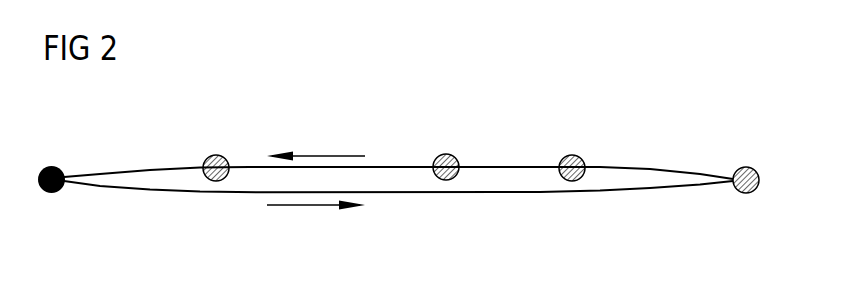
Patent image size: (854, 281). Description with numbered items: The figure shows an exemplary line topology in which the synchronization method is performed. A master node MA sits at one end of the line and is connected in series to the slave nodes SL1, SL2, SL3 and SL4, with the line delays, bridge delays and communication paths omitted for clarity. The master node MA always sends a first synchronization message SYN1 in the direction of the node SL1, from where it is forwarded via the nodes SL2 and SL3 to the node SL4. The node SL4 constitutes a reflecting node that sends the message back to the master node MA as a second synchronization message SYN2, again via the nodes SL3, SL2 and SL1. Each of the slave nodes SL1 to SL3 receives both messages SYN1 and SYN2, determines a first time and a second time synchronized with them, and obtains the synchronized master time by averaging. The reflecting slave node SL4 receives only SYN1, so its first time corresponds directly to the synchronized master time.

The master node MA is at (53, 167).
The slave node SL1 is at (219, 156).
The slave node SL2 is at (448, 155).
The slave node SL3 is at (573, 156).
The reflecting slave node SL4 is at (751, 168).
The first synchronization message SYN1 is at (318, 209).
The second synchronization message SYN2 is at (325, 153).